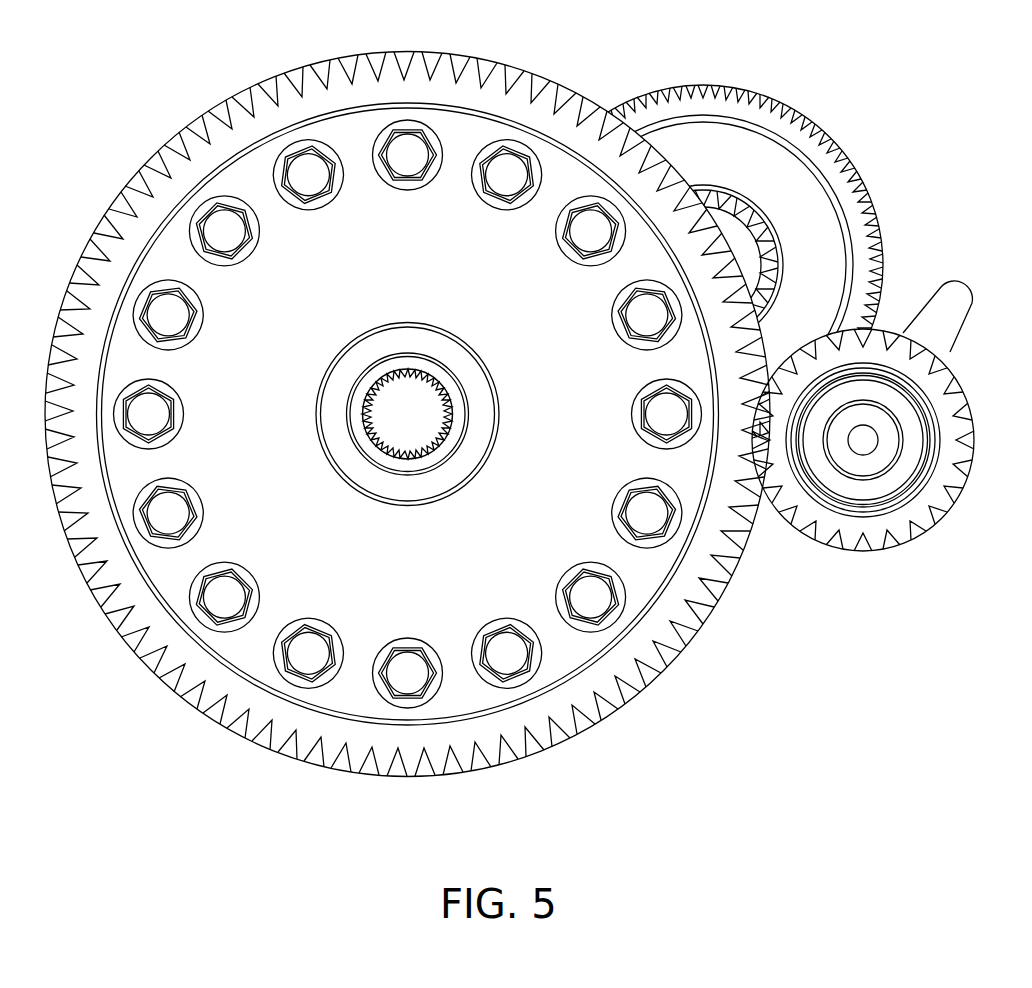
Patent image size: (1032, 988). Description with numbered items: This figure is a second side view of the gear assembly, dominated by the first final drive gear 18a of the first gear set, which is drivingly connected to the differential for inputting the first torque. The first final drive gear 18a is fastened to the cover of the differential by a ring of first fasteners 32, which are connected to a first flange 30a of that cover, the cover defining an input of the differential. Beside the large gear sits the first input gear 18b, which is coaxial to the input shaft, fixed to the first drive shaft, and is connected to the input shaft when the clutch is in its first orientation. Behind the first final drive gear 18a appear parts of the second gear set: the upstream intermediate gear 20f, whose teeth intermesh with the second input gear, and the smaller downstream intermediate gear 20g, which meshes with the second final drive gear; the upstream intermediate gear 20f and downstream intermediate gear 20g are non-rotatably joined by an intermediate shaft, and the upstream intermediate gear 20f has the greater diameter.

The first final drive gear 18a is at (220, 150).
The first input gear 18b is at (952, 463).
The upstream intermediate gear 20f is at (823, 170).
The downstream intermediate gear 20g is at (743, 233).
The first flange 30a is at (372, 117).
The first fasteners 32 is at (307, 163).